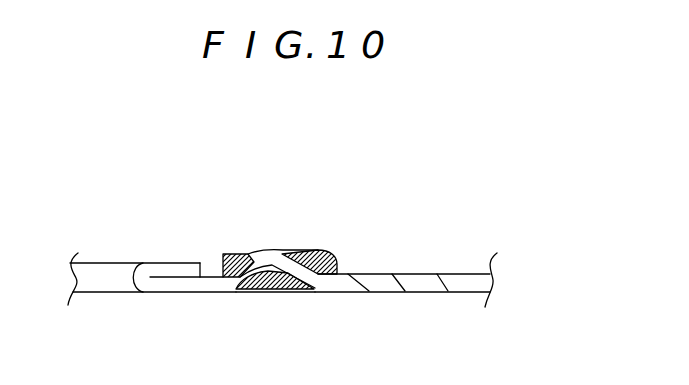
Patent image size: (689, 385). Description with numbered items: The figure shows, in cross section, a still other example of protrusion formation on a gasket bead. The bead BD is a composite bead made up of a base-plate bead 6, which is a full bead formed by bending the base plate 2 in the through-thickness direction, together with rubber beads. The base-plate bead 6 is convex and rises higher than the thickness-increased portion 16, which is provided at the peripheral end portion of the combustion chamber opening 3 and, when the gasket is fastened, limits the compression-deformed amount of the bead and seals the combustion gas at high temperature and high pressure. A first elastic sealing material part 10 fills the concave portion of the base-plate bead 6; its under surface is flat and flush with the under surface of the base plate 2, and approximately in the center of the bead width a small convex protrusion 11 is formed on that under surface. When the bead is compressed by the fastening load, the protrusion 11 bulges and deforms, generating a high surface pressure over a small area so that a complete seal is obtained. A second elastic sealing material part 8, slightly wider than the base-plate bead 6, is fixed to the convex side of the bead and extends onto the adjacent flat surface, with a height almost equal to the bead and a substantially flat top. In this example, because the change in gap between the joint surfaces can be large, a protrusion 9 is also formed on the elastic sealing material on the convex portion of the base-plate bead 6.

The base plate 2 is at (452, 273).
The combustion chamber opening 3 is at (138, 289).
The base-plate bead 6 is at (285, 250).
The second elastic sealing material part 8 is at (223, 253).
The protrusion 9 is at (320, 249).
The first elastic sealing material part 10 is at (244, 293).
The protrusion 11 is at (278, 294).
The thickness-increased portion 16 is at (191, 288).
The bead BD is at (267, 250).